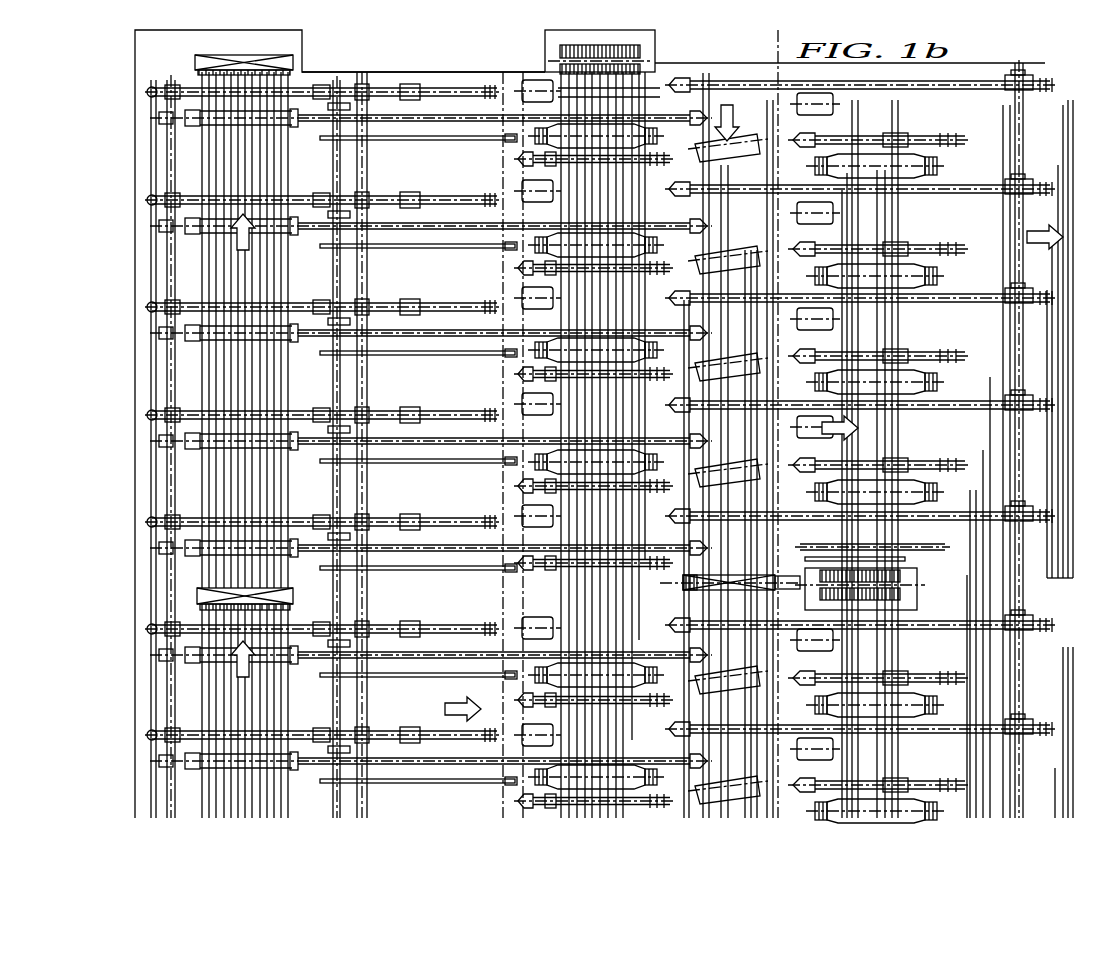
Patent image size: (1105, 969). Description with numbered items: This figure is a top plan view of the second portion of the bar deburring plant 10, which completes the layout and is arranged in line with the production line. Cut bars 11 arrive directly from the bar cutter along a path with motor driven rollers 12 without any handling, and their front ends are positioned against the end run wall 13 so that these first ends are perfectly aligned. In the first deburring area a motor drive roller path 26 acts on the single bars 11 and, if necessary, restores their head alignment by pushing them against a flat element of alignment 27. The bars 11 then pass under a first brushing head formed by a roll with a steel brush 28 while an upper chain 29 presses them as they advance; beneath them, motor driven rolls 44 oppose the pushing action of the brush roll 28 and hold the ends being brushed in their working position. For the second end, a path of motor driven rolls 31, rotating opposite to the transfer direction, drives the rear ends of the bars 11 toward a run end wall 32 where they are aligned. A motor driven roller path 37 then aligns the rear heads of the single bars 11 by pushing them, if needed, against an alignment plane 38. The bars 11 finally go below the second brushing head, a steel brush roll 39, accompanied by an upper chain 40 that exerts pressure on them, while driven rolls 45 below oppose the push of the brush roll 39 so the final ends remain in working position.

The bar deburring plant 10 is at (968, 68).
The cut bars 11 is at (262, 497).
The motor driven rollers 12 is at (183, 338).
The end run wall 13 is at (195, 63).
The motor drive roller path 26 is at (533, 98).
The flat element of alignment 27 is at (501, 68).
The steel brush roll 28 is at (562, 52).
The upper chain 29 is at (650, 96).
The motor driven rolls 31 is at (713, 151).
The run end wall 32 is at (760, 591).
The motor driven roller path 37 is at (807, 318).
The alignment plane 38 is at (797, 577).
The steel brush roll 39 is at (899, 591).
The upper chain 40 is at (915, 546).
The motor driven rolls 44 is at (533, 251).
The driven rolls 45 is at (921, 177).